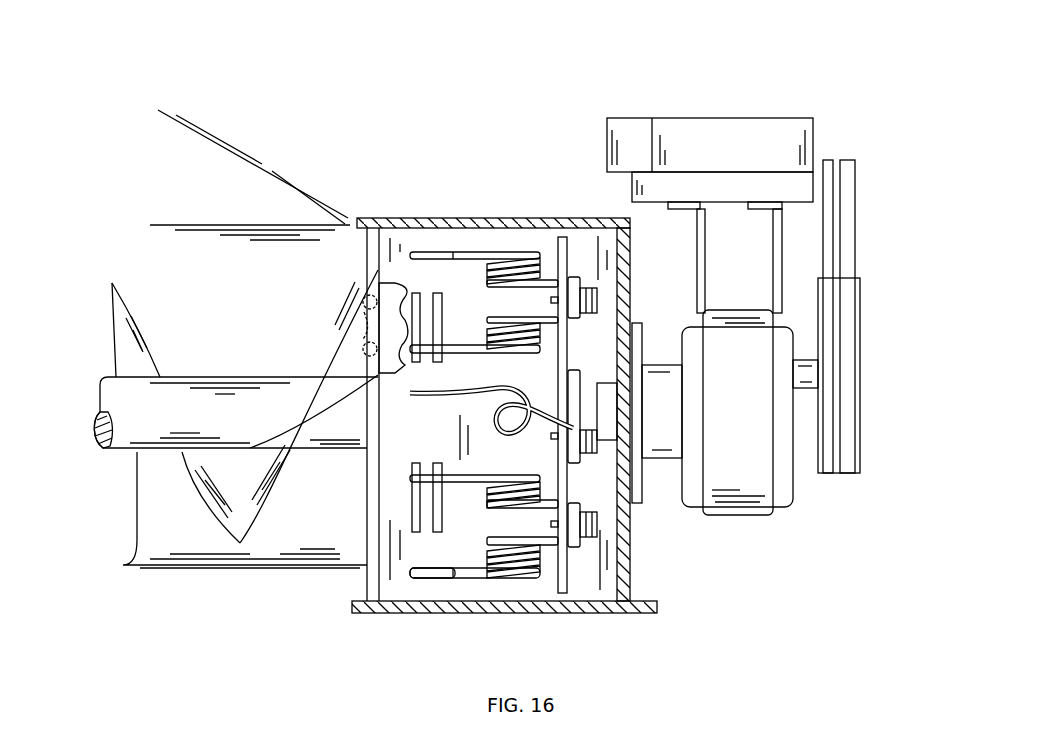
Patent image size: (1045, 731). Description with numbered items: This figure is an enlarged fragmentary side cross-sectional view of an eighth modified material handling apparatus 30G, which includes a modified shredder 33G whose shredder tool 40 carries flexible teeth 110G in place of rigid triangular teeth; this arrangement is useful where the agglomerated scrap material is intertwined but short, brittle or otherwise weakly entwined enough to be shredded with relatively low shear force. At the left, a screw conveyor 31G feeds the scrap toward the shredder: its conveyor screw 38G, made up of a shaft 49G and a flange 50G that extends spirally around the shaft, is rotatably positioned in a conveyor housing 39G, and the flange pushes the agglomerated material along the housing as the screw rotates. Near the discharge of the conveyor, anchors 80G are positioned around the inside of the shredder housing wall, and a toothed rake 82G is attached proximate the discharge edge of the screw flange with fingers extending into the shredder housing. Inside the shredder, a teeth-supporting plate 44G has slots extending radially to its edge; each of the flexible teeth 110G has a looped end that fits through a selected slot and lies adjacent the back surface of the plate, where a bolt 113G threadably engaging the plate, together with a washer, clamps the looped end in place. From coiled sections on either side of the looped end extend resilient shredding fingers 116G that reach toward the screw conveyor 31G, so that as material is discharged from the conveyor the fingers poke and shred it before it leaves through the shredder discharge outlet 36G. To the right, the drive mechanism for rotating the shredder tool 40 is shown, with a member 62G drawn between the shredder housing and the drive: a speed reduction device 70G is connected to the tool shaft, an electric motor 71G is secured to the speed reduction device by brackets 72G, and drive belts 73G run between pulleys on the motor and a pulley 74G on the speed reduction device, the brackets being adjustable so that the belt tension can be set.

The material handling apparatus 30G is at (478, 118).
The screw conveyor 31G is at (238, 578).
The modified shredder 33G is at (408, 210).
The shredder discharge outlet 36G is at (602, 612).
The conveyor screw 38G is at (93, 387).
The conveyor housing 39G is at (168, 568).
The shredder tool 40 is at (451, 216).
The teeth-supporting plate 44G is at (561, 236).
The shaft 49G is at (97, 432).
The flange 50G is at (207, 500).
The mounting flange 62G is at (635, 322).
The speed reduction device 70G is at (774, 517).
The electric motor 71G is at (817, 130).
The brackets 72G is at (707, 257).
The drive belts 73G is at (854, 235).
The pulley 74G is at (861, 338).
The anchors 80G is at (407, 507).
The toothed rake 82G is at (385, 322).
The flexible teeth 110G is at (483, 245).
The bolt 113G is at (598, 526).
The resilient shredding fingers 116G is at (430, 579).